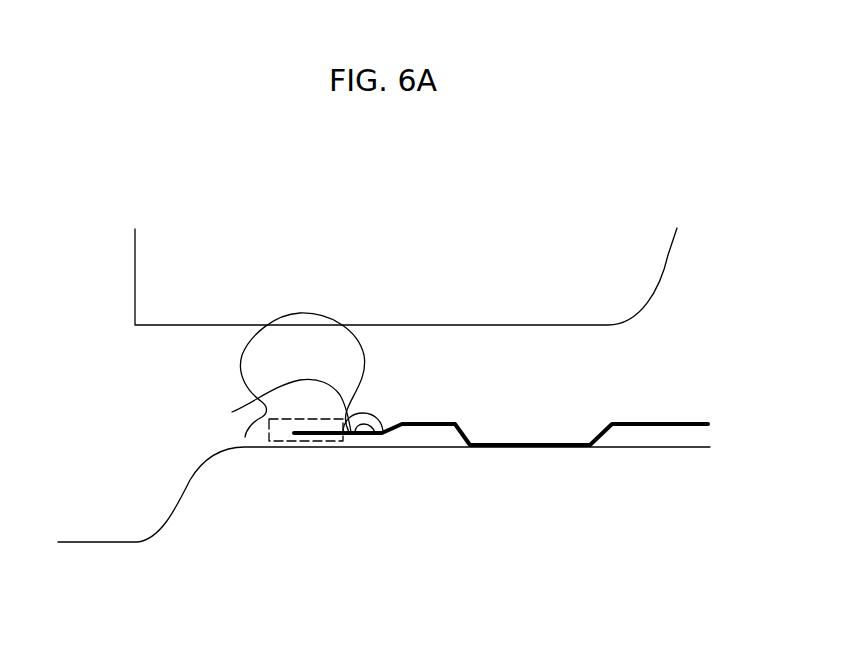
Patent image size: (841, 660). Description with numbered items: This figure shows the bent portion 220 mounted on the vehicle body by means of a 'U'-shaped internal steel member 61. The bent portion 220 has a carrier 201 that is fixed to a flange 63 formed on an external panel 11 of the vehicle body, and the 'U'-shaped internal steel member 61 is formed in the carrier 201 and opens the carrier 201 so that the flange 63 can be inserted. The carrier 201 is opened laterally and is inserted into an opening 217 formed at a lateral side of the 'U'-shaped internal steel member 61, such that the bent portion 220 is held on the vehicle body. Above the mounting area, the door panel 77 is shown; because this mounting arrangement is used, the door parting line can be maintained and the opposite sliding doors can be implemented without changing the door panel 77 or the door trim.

The door panel 77 is at (134, 259).
The bent portion 220 is at (315, 313).
The opening 217 is at (232, 412).
The carrier 201 is at (375, 422).
The 'U'-shaped internal steel member 61 is at (294, 435).
The flange 63 is at (427, 424).
The external panel 11 is at (110, 542).